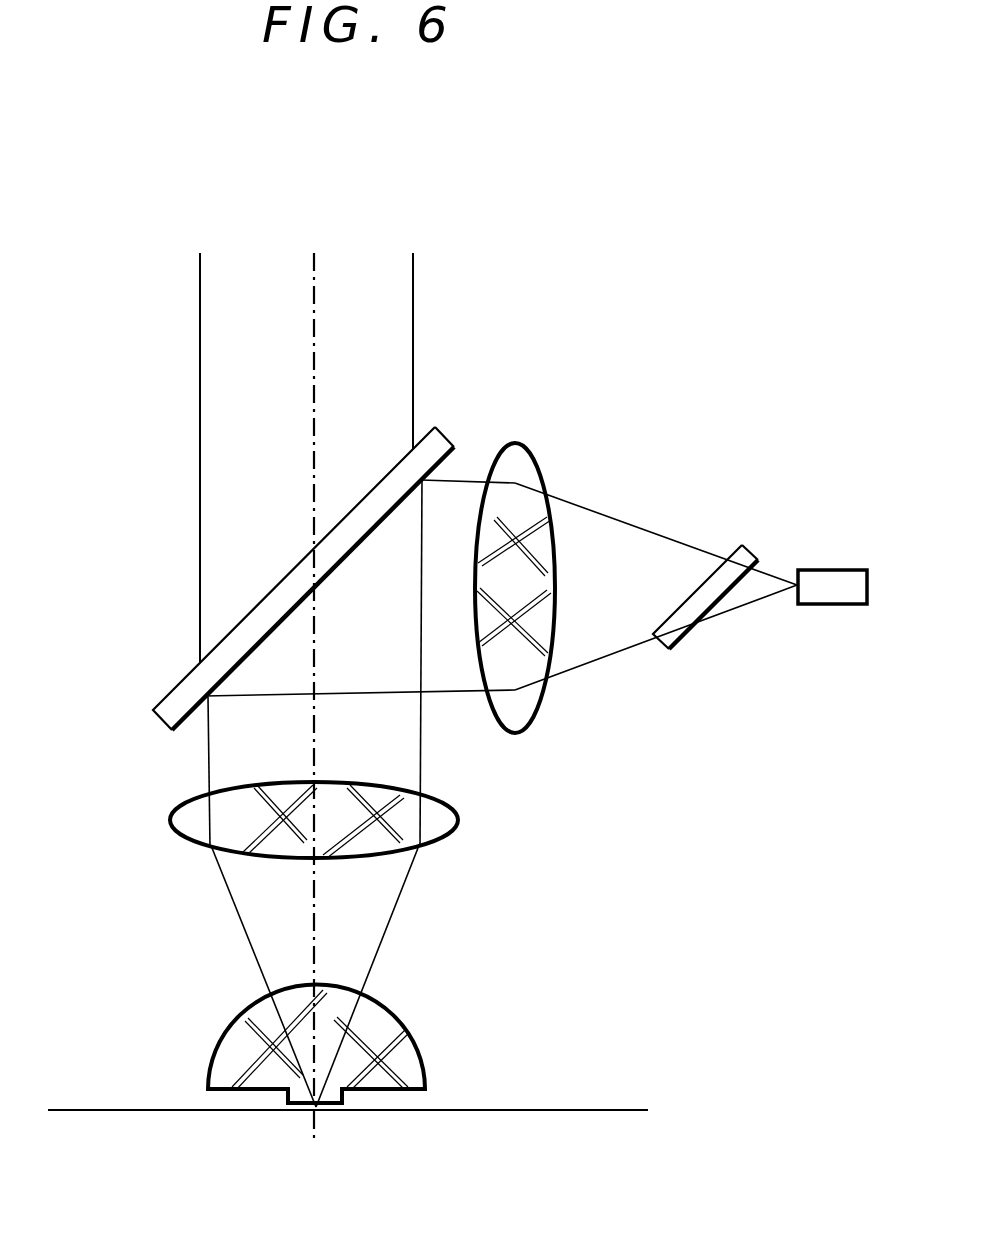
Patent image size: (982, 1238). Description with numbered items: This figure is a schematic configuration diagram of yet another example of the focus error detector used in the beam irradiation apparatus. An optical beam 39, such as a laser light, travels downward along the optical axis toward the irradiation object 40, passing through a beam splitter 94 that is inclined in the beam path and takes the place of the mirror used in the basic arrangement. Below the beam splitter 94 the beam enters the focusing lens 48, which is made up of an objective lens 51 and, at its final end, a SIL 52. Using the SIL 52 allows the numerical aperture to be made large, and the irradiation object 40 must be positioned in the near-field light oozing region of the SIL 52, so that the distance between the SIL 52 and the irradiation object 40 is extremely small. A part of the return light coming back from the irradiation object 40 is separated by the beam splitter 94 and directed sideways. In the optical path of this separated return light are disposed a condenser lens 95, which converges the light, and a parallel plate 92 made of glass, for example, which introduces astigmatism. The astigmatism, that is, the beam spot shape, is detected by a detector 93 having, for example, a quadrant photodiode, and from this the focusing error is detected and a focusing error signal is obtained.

The optical beam 39 is at (413, 293).
The beam splitter 94 is at (445, 428).
The condenser lens 95 is at (512, 455).
The parallel plate 92 is at (742, 545).
The detector 93 is at (826, 570).
The objective lens 51 is at (457, 820).
The focusing lens 48 is at (505, 920).
The SIL 52 is at (400, 1037).
The irradiation object 40 is at (602, 1108).